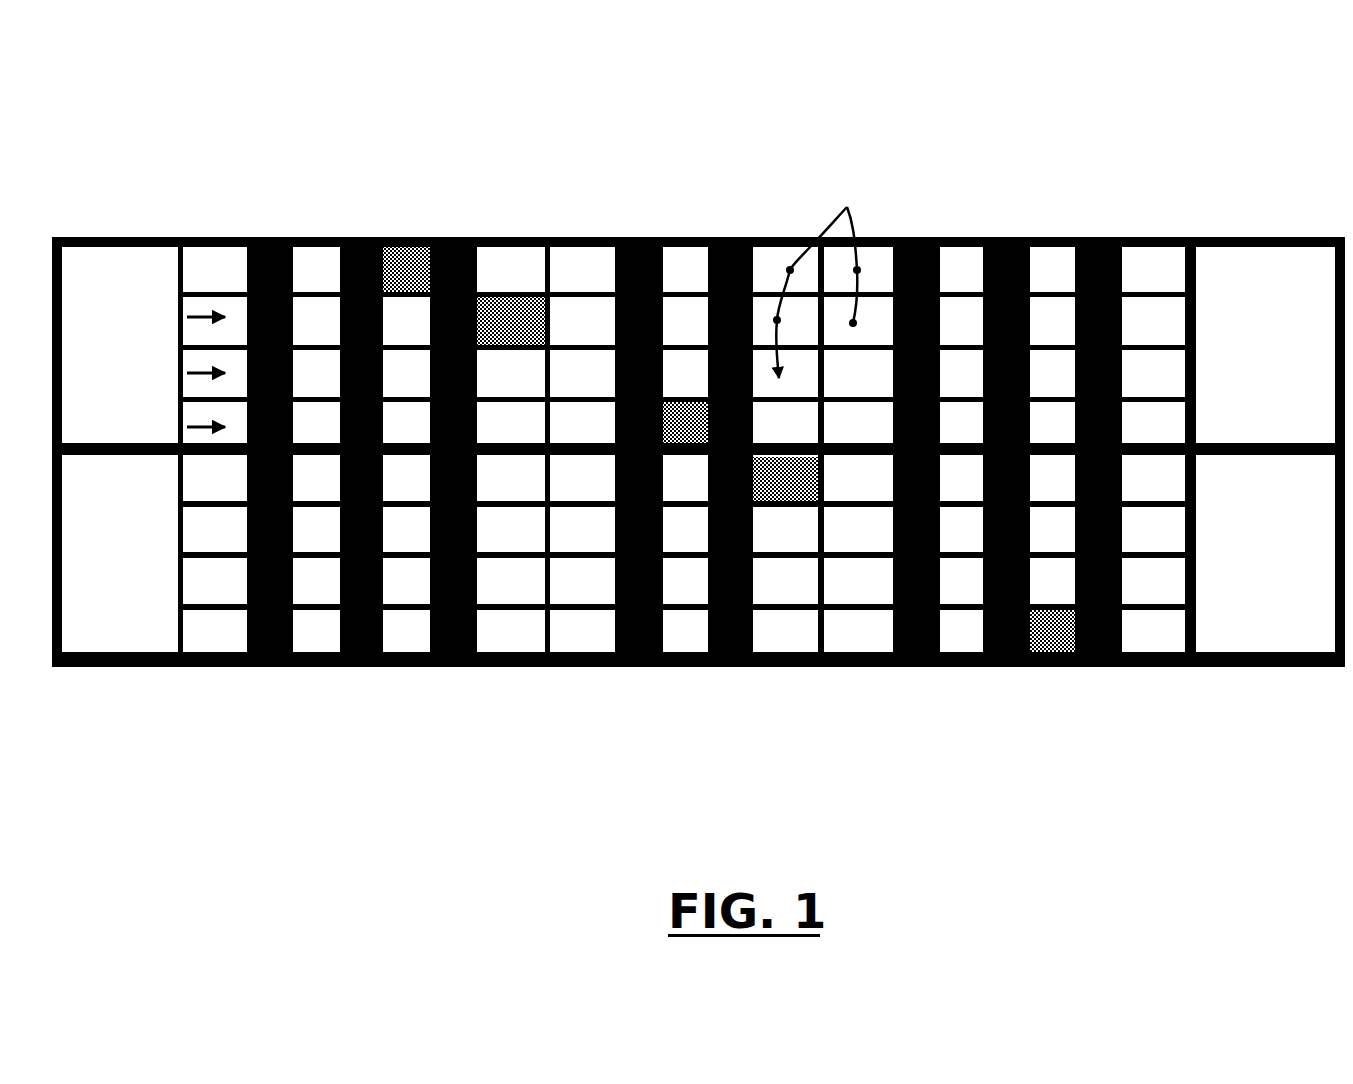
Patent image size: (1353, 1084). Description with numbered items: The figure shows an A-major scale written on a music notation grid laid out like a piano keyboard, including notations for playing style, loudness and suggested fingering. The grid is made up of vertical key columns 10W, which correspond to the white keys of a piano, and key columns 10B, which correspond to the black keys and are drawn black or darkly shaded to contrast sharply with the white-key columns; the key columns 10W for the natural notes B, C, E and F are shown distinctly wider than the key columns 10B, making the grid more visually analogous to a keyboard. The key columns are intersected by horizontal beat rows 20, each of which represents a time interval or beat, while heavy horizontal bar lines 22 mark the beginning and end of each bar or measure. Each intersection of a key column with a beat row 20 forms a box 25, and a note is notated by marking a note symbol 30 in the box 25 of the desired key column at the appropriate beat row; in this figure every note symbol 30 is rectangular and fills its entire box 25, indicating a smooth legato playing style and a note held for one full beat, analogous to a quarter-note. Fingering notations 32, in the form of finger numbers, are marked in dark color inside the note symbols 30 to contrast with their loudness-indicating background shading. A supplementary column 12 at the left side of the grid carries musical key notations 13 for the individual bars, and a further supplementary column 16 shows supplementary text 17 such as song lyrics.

The key columns corresponding to black keys 10B is at (363, 222).
The key columns corresponding to white keys 10W is at (313, 682).
The supplementary column 12 is at (121, 585).
The musical key notations 13 is at (97, 262).
The further supplementary column 16 is at (1228, 605).
The supplementary text 17 is at (1240, 320).
The beat rows 20 is at (182, 317).
The bar lines 22 is at (1153, 237).
The box 25 is at (847, 207).
The note symbol 30 is at (477, 378).
The fingering notations 32 is at (616, 373).